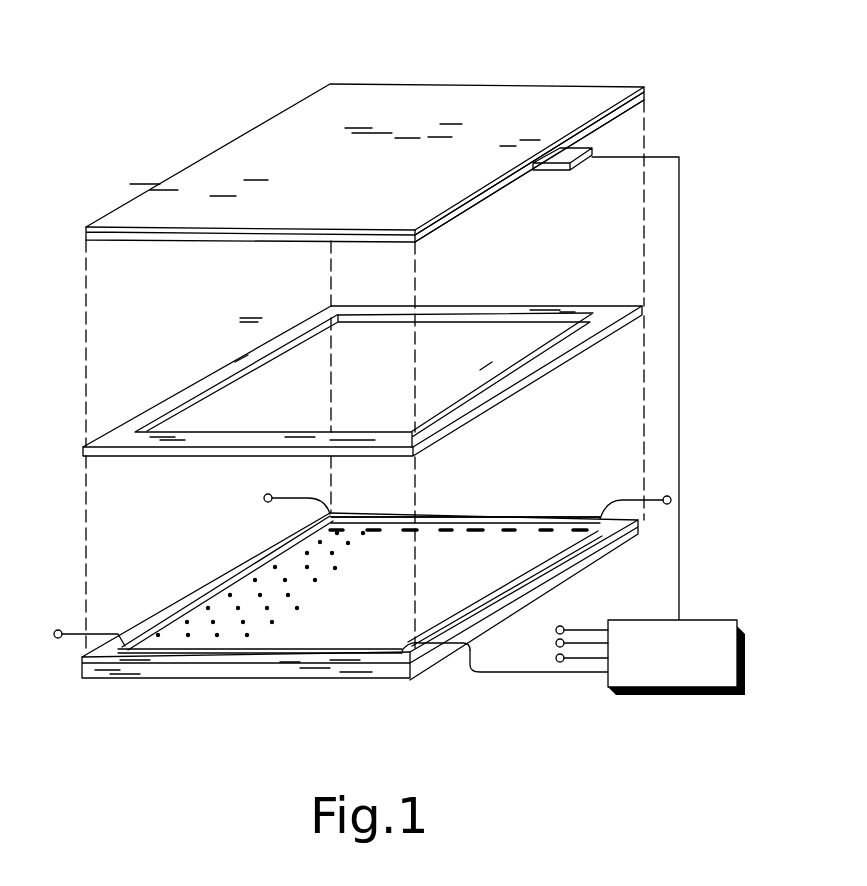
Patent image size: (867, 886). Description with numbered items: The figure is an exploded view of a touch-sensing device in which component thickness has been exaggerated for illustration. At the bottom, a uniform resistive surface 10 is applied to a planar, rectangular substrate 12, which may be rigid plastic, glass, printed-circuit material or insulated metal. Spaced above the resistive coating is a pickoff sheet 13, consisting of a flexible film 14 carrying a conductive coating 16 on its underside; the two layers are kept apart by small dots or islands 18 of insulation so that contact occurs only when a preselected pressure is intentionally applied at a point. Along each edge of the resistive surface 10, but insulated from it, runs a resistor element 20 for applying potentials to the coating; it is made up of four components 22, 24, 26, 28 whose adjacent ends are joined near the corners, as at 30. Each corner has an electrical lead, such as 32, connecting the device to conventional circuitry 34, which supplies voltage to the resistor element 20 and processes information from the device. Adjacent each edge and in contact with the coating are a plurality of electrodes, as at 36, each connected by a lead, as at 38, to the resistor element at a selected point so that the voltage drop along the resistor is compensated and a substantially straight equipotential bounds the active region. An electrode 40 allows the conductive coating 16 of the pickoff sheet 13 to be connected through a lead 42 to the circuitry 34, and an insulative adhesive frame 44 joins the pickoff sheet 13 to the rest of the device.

The uniform resistive surface 10 is at (465, 578).
The substrate 12 is at (205, 672).
The pickoff sheet 13 is at (607, 70).
The flexible film 14 is at (395, 168).
The conductive coating 16 is at (450, 218).
The dots or islands of insulation 18 is at (186, 622).
The resistor element 20 is at (552, 512).
The resistor element component 22 is at (435, 527).
The resistor element component 24 is at (240, 580).
The resistor element component 26 is at (288, 653).
The resistor element component 28 is at (563, 553).
The corner junction 30 is at (410, 655).
The electrical lead 32 is at (540, 680).
The circuitry 34 is at (697, 620).
The electrodes 36 is at (505, 528).
The lead 38 is at (532, 528).
The electrode 40 is at (545, 168).
The lead 42 is at (680, 290).
The insulative adhesive frame 44 is at (511, 393).